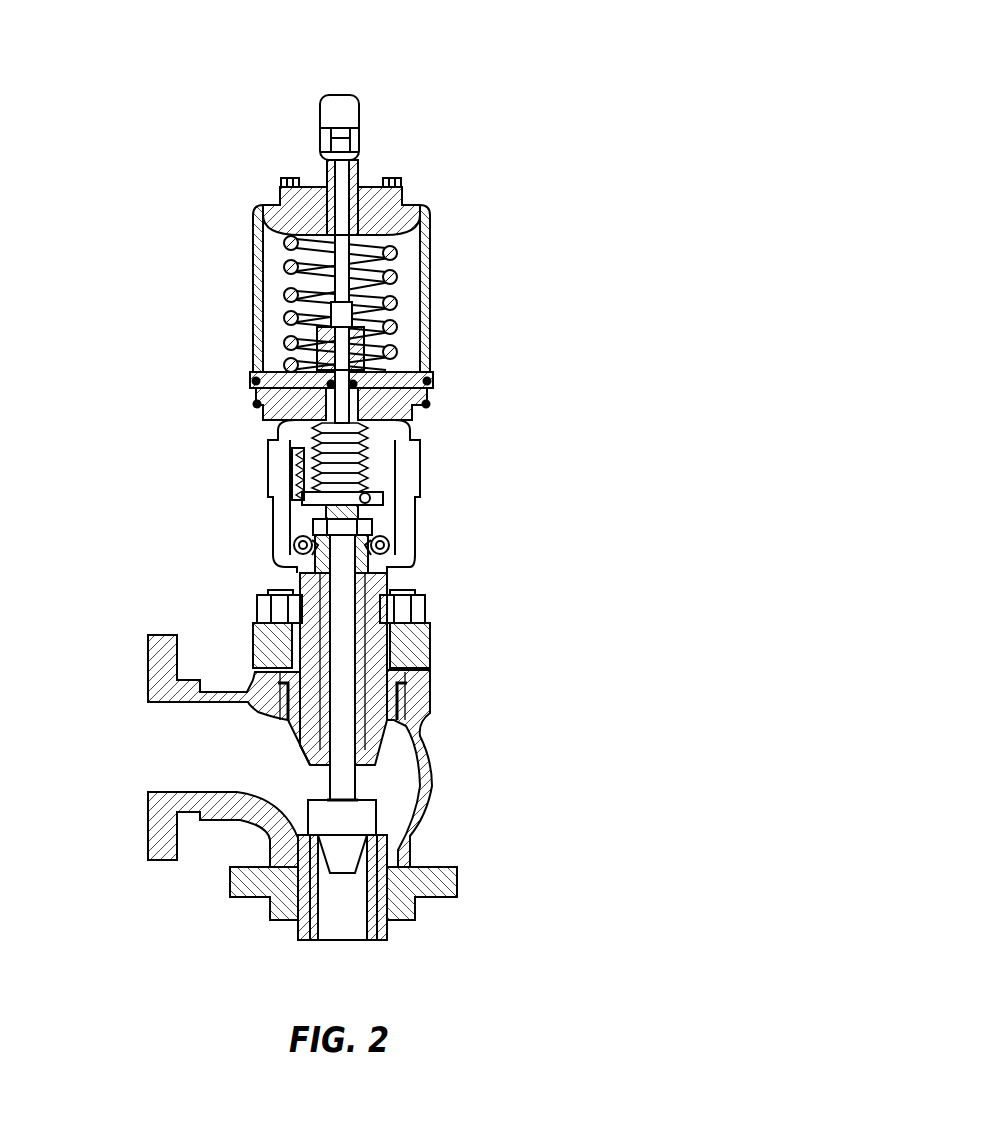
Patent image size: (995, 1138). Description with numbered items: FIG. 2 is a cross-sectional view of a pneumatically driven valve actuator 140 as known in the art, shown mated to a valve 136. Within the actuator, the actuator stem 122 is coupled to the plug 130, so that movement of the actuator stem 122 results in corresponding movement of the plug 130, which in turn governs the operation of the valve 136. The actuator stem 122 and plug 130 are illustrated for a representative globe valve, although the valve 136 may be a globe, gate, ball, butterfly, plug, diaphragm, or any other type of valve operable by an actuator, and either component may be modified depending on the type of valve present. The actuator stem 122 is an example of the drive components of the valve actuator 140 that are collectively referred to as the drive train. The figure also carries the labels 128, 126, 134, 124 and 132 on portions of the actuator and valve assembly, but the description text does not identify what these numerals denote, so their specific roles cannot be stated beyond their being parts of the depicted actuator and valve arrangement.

The valve actuator 140 is at (506, 72).
The bonnet flange 128 is at (368, 200).
The actuator housing 126 is at (255, 263).
The spring 134 is at (292, 296).
The spring seat 124 is at (344, 346).
The actuator stem 122 is at (396, 357).
The valve body 132 is at (307, 727).
The valve 136 is at (432, 758).
The plug 130 is at (347, 782).